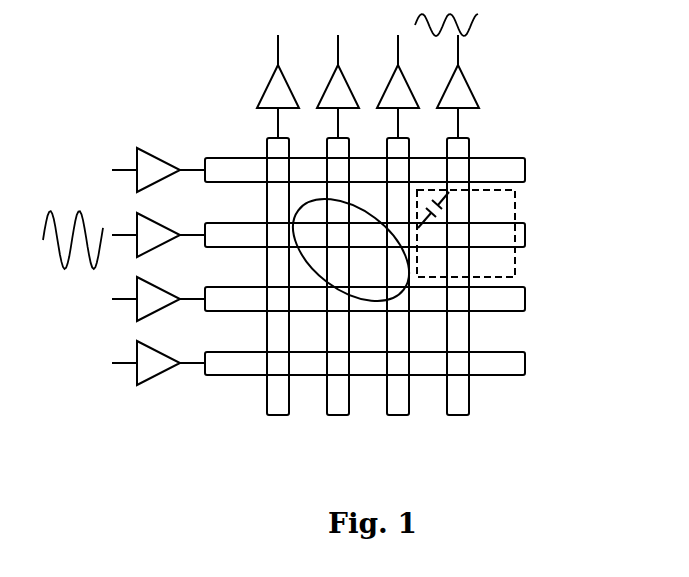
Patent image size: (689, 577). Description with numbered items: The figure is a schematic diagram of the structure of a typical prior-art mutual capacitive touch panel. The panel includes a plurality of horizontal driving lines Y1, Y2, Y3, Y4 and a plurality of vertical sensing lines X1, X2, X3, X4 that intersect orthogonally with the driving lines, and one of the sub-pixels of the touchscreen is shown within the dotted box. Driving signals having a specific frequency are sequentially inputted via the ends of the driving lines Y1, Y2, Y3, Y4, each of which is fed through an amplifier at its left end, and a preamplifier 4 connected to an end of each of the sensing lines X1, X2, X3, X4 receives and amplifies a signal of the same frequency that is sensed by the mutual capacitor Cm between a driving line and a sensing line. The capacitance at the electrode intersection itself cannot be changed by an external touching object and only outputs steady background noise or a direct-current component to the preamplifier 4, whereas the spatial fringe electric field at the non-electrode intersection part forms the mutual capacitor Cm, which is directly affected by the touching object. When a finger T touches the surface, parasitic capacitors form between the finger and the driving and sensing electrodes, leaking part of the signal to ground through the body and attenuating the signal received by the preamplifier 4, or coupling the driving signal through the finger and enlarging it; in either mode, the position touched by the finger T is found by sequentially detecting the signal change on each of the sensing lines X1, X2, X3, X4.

The amplifier / driving circuit 4 is at (455, 100).
The finger T is at (307, 200).
The mutual capacitor Cm is at (466, 233).
The sensing line X1 is at (277, 292).
The sensing line X2 is at (338, 292).
The sensing line X3 is at (398, 292).
The sensing line X4 is at (458, 292).
The driving line Y1 is at (383, 170).
The driving line Y2 is at (383, 235).
The driving line Y3 is at (383, 299).
The driving line Y4 is at (383, 363).